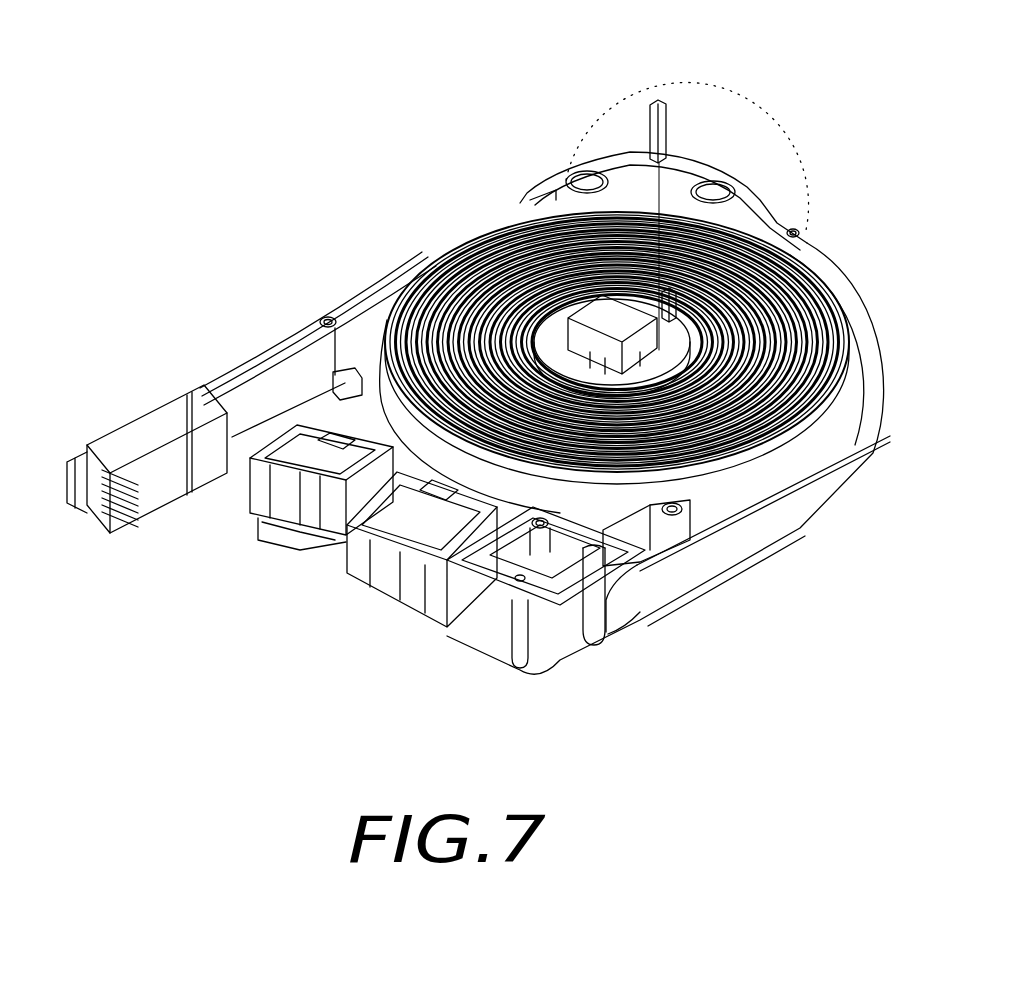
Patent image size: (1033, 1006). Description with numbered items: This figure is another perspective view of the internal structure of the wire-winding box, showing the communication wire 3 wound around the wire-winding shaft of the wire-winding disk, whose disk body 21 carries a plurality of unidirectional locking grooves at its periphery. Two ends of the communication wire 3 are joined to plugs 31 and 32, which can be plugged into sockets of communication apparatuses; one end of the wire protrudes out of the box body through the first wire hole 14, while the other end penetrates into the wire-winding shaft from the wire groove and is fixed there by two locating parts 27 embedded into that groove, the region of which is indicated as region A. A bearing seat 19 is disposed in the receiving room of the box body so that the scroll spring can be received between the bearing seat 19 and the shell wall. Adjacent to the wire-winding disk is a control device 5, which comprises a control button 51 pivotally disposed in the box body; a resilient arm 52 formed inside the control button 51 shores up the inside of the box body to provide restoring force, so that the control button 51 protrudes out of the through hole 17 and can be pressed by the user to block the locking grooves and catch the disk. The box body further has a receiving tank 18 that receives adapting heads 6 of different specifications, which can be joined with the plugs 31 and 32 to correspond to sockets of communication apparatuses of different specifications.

The communication wire 3 is at (423, 260).
The control device 5 is at (613, 645).
The adapting heads 6 is at (290, 545).
The first wire hole 14 is at (337, 390).
The through hole 17 is at (643, 614).
The receiving tank 18 is at (307, 556).
The bearing seat 19 is at (618, 166).
The disk body 21 is at (830, 443).
The locating parts 27 is at (657, 98).
The plug 31 is at (108, 440).
The plug 32 is at (470, 222).
The control button 51 is at (588, 642).
The resilient arm 52 is at (643, 560).
The region A is at (752, 106).